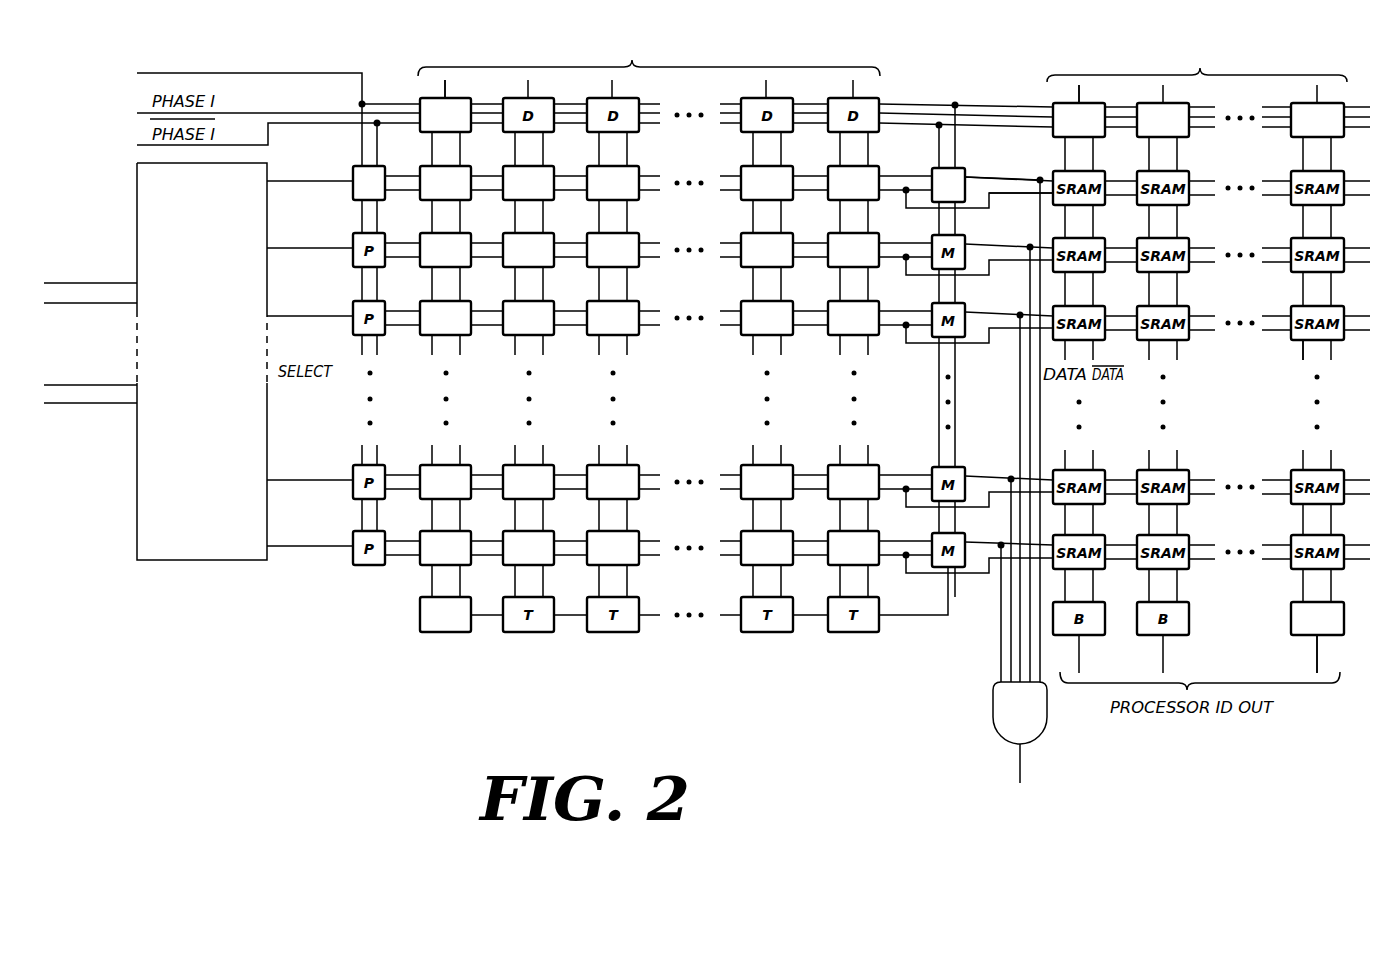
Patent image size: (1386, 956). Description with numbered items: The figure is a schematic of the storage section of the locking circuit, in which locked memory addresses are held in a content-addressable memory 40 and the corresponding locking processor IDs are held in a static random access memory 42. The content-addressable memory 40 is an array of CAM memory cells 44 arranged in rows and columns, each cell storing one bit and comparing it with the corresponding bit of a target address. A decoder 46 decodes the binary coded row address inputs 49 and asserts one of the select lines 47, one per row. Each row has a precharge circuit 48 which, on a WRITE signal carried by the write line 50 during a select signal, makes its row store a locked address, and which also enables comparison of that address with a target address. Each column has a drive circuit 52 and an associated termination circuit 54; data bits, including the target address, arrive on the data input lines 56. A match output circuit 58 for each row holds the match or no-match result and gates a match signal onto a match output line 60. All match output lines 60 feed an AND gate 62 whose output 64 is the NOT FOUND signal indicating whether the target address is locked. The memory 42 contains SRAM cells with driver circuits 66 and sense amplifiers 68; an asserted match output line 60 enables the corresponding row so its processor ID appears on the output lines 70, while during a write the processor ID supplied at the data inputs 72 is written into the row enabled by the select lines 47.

The content-addressable memory 40 is at (649, 297).
The static random access memory 42 is at (1193, 84).
The memory cell 44 is at (639, 335).
The decoder 46 is at (137, 182).
The select line 47 is at (318, 181).
The precharge circuit 48 is at (356, 166).
The row address inputs 49 is at (80, 283).
The write line 50 is at (294, 73).
The drive circuit 52 is at (458, 98).
The termination circuit 54 is at (421, 632).
The data input lines 56 is at (440, 86).
The match output circuit 58 is at (961, 168).
The match output line 60 is at (997, 177).
The AND gate 62 is at (1030, 723).
The output 64 is at (1020, 766).
The driver circuit 66 is at (1291, 103).
The sense amplifier 68 is at (1291, 633).
The output lines 70 is at (1317, 661).
The data inputs 72 is at (1080, 89).